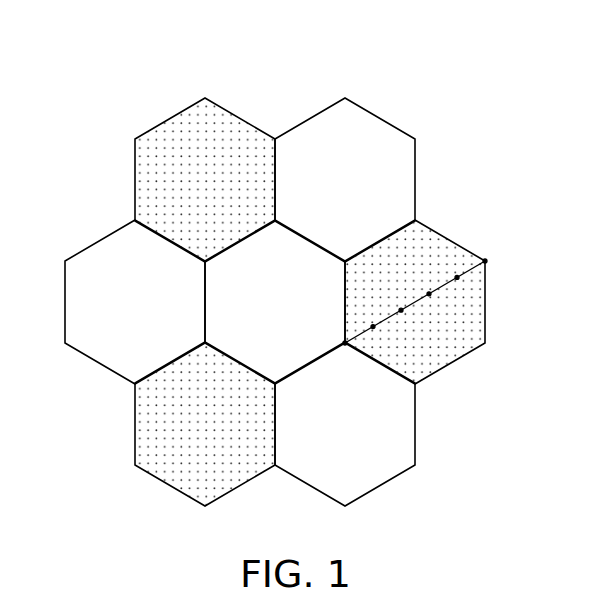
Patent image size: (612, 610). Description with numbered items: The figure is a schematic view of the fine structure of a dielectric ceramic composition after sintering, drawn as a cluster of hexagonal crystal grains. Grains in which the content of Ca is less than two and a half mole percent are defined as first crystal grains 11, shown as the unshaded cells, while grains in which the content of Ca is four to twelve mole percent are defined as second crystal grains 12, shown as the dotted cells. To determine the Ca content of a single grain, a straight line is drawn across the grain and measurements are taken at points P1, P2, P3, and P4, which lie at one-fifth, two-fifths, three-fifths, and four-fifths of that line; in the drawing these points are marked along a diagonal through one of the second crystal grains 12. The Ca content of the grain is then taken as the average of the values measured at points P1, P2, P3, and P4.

The first crystal grains 11 is at (305, 268).
The second crystal grains 12 is at (423, 262).
The point P1 is at (386, 340).
The point P2 is at (414, 323).
The point P3 is at (442, 307).
The point P4 is at (470, 290).